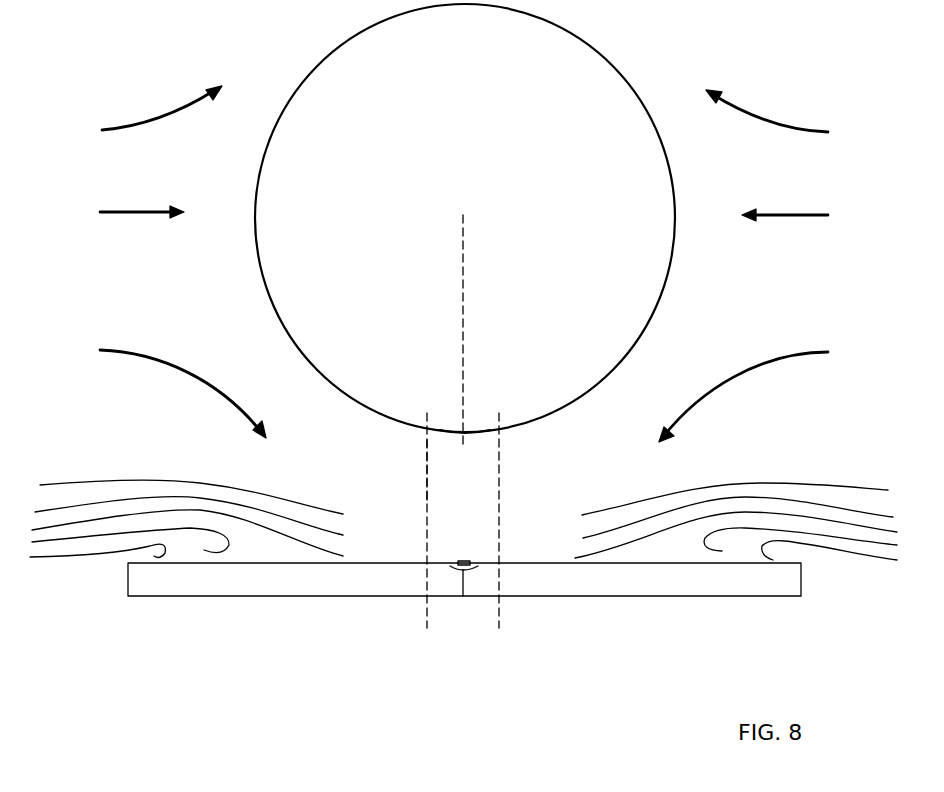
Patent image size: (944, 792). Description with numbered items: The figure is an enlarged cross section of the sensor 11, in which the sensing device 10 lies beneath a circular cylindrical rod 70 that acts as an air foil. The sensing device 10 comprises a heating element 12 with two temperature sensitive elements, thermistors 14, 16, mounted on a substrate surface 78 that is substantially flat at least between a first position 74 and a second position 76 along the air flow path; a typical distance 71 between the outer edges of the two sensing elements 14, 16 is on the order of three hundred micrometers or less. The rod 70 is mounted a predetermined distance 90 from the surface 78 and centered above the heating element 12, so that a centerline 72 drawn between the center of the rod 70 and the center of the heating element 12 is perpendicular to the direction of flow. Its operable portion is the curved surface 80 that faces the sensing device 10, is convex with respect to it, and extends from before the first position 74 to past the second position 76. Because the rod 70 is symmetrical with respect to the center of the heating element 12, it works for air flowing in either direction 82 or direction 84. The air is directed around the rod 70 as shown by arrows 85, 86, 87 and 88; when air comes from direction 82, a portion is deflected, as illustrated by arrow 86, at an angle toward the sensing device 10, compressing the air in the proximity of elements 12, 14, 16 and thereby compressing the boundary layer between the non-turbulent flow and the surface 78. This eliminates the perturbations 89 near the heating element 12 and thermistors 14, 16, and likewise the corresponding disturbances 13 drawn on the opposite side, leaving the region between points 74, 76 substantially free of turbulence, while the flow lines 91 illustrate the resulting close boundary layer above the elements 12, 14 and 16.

The sensing device 10 is at (305, 592).
The sensor 11 is at (645, 45).
The heating element 12 is at (463, 561).
The vortex 13 is at (663, 565).
The temperature sensitive element 14 is at (452, 562).
The temperature sensitive element 16 is at (474, 562).
The circular cylindrical rod 70 is at (350, 33).
The distance between outer edges of sensing elements 71 is at (463, 596).
The centerline 72 is at (463, 347).
The first position 74 is at (427, 610).
The second position 76 is at (499, 610).
The substrate surface 78 is at (490, 562).
The curved surface 80 is at (477, 433).
The air flow direction 82 is at (137, 212).
The air flow direction 84 is at (793, 213).
The arrow 85 is at (185, 108).
The arrow 86 is at (155, 352).
The arrow 87 is at (765, 118).
The arrow 88 is at (788, 352).
The perturbations 89 is at (150, 548).
The distance 90 is at (427, 473).
The flow lines 91 is at (132, 470).